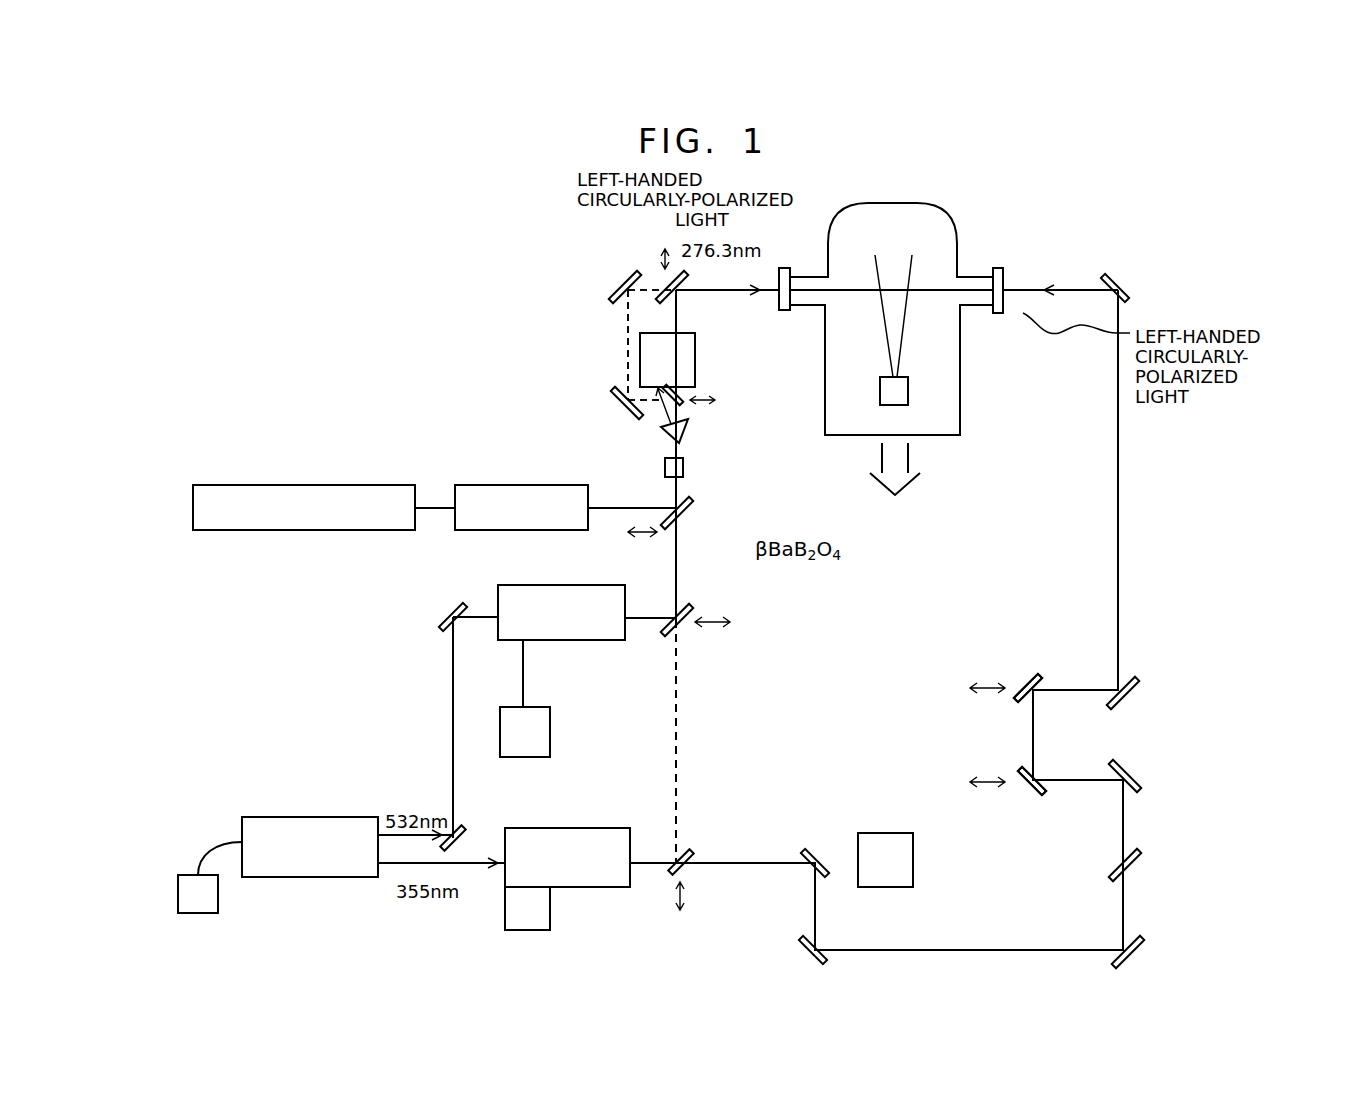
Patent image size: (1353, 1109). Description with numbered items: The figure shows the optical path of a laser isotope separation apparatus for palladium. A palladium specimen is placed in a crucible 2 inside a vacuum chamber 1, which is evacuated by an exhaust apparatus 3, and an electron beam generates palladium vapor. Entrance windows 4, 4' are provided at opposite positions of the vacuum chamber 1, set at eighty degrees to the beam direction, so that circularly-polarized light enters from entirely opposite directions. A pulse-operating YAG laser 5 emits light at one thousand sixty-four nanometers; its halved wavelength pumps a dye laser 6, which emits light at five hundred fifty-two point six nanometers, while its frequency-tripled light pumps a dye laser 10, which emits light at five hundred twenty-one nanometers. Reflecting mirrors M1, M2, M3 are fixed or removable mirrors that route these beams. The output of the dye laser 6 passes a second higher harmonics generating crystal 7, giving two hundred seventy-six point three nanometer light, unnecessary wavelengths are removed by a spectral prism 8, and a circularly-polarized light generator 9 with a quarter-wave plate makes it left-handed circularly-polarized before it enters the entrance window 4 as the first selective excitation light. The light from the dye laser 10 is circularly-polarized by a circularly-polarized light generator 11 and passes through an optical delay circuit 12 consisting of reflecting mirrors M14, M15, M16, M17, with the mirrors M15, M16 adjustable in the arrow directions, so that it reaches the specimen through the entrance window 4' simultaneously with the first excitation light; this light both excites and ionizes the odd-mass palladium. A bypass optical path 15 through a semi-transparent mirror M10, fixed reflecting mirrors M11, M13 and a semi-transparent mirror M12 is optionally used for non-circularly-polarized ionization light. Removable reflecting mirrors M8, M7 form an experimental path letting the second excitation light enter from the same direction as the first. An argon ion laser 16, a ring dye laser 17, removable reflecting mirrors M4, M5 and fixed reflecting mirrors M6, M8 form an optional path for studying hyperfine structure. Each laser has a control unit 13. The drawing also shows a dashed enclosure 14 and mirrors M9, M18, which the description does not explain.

The vacuum chamber 1 is at (937, 212).
The crucible 2 is at (908, 390).
The exhaust apparatus 3 is at (908, 458).
The entrance window 4 is at (793, 265).
The entrance window 4' is at (1016, 266).
The YAG laser 5 is at (300, 817).
The dye laser 6 is at (575, 585).
The second higher harmonics generating crystal 7 is at (683, 470).
The spectral prism 8 is at (688, 425).
The circularly-polarized light generator 9 is at (628, 357).
The dye laser 10 is at (630, 840).
The circularly-polarized light generator 11 is at (858, 840).
The optical delay circuit 12 is at (1063, 660).
The control unit 13 is at (550, 730).
The second harmonic generator unit 14 is at (628, 312).
The bypass optical path 15 is at (1020, 950).
The argon ion laser 16 is at (250, 485).
The ring dye laser 17 is at (495, 485).
The reflecting mirror M1 is at (467, 840).
The reflecting mirror M2 is at (445, 624).
The reflecting mirror M3 is at (690, 615).
The removable reflecting mirror M4 is at (688, 520).
The removable reflecting mirror M5 is at (690, 392).
The fixed reflecting mirror M6 is at (616, 410).
The removable reflecting mirror M7 is at (692, 282).
The fixed reflecting mirror M8 is at (621, 280).
The mirror M9 is at (690, 872).
The semi-transparent mirror M10 is at (825, 873).
The fixed reflecting mirror M11 is at (825, 958).
The semi-transparent mirror M12 is at (1140, 857).
The fixed reflecting mirror M13 is at (1142, 960).
The reflecting mirror M14 is at (1140, 780).
The adjustable reflecting mirror M15 is at (1035, 795).
The adjustable reflecting mirror M16 is at (1023, 678).
The reflecting mirror M17 is at (1135, 688).
The mirror M18 is at (1130, 290).